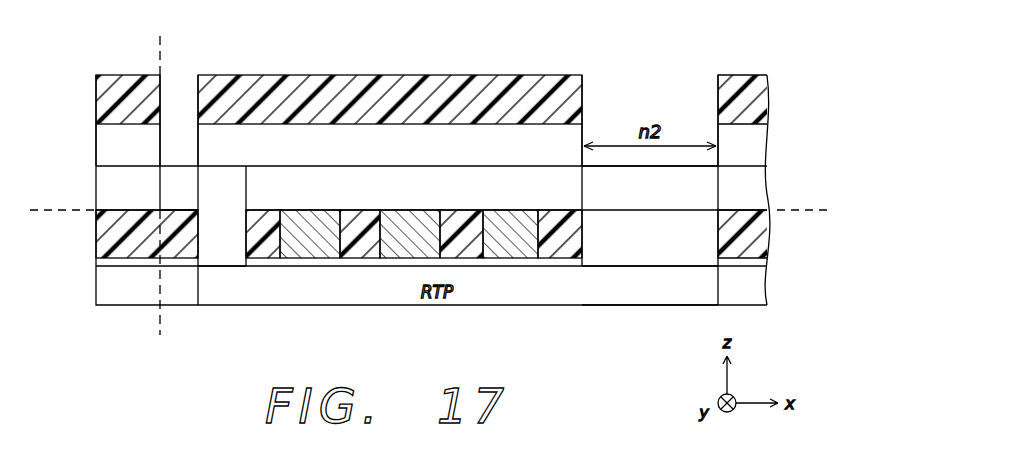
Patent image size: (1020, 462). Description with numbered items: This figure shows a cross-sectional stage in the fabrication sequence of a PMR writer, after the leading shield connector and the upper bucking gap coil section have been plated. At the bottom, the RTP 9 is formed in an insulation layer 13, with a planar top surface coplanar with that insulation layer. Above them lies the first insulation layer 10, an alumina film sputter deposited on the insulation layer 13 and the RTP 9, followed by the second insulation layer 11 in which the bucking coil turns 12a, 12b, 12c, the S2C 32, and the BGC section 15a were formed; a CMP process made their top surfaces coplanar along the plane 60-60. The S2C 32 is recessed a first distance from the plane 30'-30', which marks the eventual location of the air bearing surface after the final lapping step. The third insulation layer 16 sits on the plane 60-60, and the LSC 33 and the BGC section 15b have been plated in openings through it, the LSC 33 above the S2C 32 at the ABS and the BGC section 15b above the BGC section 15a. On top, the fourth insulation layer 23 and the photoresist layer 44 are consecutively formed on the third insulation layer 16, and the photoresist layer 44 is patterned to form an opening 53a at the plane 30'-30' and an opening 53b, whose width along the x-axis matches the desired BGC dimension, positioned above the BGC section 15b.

The photoresist layer 44 is at (110, 100).
The fourth insulation layer 23 is at (110, 137).
The third insulation layer 16 is at (110, 181).
The second insulation layer 11 is at (110, 227).
The first turn of bucking coil layer 12a is at (303, 250).
The second turn of bucking coil layer 12b is at (408, 247).
The third turn of bucking coil layer 12c is at (510, 247).
The first insulation layer 10 is at (110, 262).
The insulation layer 13 is at (110, 290).
The RTP 9 is at (662, 295).
The BGC section 15a is at (625, 247).
The BGC section 15b is at (678, 187).
The opening 53a is at (187, 85).
The opening 53b is at (640, 85).
The LSC 33 is at (178, 188).
The S2C 32 is at (223, 248).
The plane 60 is at (431, 211).
The plane 30' is at (163, 186).